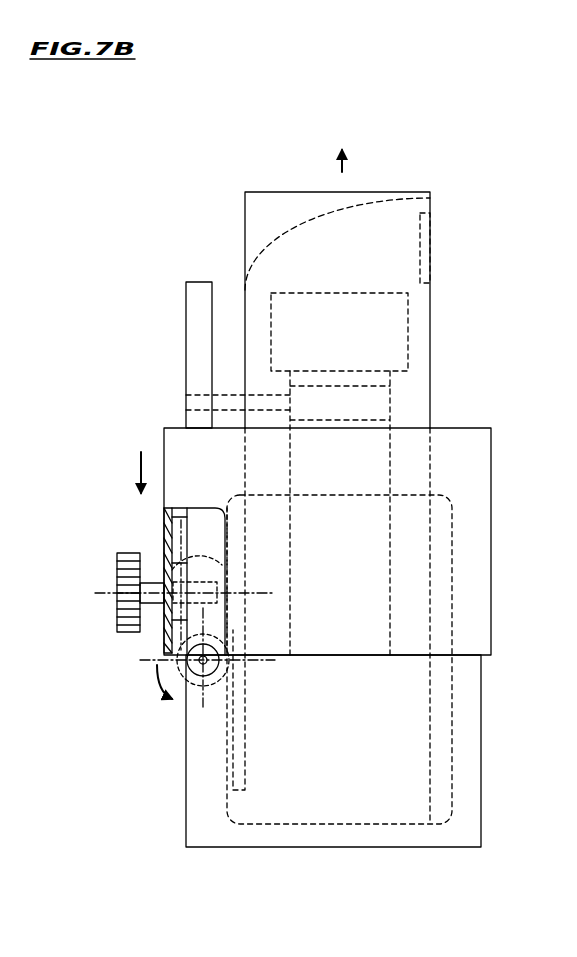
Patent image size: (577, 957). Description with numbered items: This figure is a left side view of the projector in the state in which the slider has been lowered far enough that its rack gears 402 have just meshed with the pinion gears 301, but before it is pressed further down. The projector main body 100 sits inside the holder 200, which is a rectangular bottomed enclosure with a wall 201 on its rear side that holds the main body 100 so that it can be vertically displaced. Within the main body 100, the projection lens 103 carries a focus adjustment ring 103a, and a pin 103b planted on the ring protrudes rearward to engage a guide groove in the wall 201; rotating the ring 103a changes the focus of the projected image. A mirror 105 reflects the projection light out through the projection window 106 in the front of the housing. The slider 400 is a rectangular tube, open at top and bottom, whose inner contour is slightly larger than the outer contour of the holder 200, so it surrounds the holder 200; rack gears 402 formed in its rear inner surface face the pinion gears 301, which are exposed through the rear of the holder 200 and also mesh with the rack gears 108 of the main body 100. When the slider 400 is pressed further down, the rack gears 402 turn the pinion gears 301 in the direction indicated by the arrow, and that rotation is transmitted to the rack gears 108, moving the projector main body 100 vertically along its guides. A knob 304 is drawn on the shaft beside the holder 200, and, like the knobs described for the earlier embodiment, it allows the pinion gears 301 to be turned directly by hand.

The projector main body 100 is at (237, 230).
The mirror 105 is at (300, 222).
The projection window 106 is at (432, 225).
The projection lens 103 is at (400, 323).
The focus adjustment ring 103a is at (378, 397).
The pin 103b is at (230, 408).
The wall 201 is at (200, 320).
The slider 400 is at (470, 482).
The holder 200 is at (470, 753).
The rack gears 108 is at (240, 770).
The rack gears 402 is at (200, 565).
The operation knob 304 is at (128, 553).
The pinion gears 301 is at (203, 688).